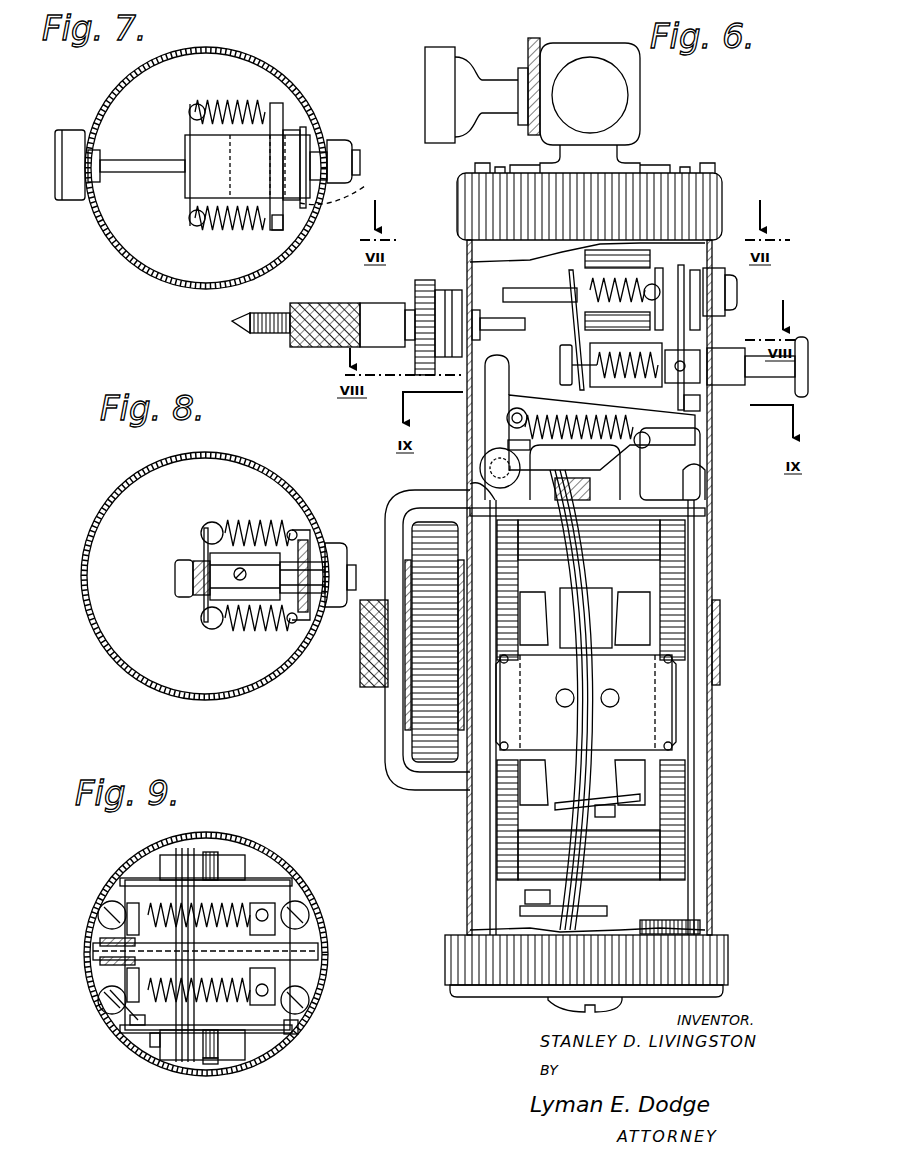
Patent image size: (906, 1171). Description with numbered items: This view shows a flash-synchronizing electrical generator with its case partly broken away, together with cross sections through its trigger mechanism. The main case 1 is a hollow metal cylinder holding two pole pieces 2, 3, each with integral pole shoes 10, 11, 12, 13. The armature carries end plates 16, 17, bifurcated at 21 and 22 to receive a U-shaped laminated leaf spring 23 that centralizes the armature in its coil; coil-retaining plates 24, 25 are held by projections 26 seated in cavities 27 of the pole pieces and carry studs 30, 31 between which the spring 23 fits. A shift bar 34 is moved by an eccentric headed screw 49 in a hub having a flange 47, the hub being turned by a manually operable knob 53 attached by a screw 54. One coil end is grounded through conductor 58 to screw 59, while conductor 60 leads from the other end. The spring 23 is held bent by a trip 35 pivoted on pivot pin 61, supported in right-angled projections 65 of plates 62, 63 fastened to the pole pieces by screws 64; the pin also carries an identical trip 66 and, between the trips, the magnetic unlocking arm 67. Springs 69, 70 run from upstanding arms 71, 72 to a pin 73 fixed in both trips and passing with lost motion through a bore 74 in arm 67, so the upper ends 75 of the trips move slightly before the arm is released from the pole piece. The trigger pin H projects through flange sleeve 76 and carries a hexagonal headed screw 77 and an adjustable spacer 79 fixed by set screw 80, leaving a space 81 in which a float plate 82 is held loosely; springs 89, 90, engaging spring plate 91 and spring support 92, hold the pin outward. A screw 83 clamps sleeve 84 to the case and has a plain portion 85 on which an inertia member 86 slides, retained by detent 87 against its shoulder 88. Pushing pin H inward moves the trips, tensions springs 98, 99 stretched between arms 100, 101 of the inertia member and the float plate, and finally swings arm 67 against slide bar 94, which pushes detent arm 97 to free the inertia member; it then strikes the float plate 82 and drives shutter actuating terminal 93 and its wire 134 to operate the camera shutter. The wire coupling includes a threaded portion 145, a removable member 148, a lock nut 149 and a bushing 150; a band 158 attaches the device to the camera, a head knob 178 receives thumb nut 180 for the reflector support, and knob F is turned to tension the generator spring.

In FIG. 6, the main case 1 is at (712, 786).
In FIG. 6, the pole piece 2 is at (690, 866).
In FIG. 6, the pole piece 3 is at (482, 846).
In FIG. 6, the pole shoe 10 is at (632, 618).
In FIG. 6, the pole shoe 11 is at (633, 782).
In FIG. 6, the pole shoe 12 is at (534, 618).
In FIG. 6, the pole shoe 13 is at (534, 782).
In FIG. 6, the armature end plate 16 is at (600, 586).
In FIG. 6, the armature end plate 17 is at (620, 818).
In FIG. 6, the bifurcation 21 is at (622, 795).
In FIG. 6, the bifurcation 22 is at (570, 600).
In FIG. 9, the bifurcation 22 is at (207, 1064).
In FIG. 6, the U-shaped leaf spring 23 is at (565, 535).
In FIG. 9, the U-shaped leaf spring 23 is at (175, 865).
In FIG. 9, the coil-retaining plate 24 is at (232, 845).
In FIG. 6, the coil-retaining plate 25 is at (673, 750).
In FIG. 9, the coil-retaining plate 25 is at (170, 1060).
In FIG. 6, the projection 26 is at (672, 742).
In FIG. 6, the cavity 27 is at (672, 660).
In FIG. 6, the stud 30 is at (613, 694).
In FIG. 6, the stud 31 is at (562, 701).
In FIG. 6, the shift bar 34 is at (607, 910).
In FIG. 6, the trip 35 is at (590, 478).
In FIG. 9, the trip 35 is at (100, 963).
In FIG. 6, the flange 47 is at (655, 925).
In FIG. 6, the headed screw 49 is at (520, 897).
In FIG. 6, the manually operable knob 53 is at (735, 968).
In FIG. 6, the screw 54 is at (560, 1003).
In FIG. 6, the conductor 58 is at (560, 497).
In FIG. 9, the conductor 58 is at (152, 1045).
In FIG. 6, the screw 59 is at (488, 484).
In FIG. 9, the screw 59 is at (132, 1025).
In FIG. 6, the conductor 60 is at (700, 490).
In FIG. 6, the pivot pin 61 is at (484, 448).
In FIG. 9, the plate 62 is at (285, 882).
In FIG. 9, the plate 63 is at (296, 1034).
In FIG. 9, the screw 64 is at (302, 907).
In FIG. 6, the right angled projection 65 is at (512, 446).
In FIG. 9, the right angled projection 65 is at (100, 912).
In FIG. 9, the trip 66 is at (100, 943).
In FIG. 6, the unlocking arm 67 is at (692, 458).
In FIG. 9, the unlocking arm 67 is at (318, 951).
In FIG. 9, the spring 69 is at (230, 905).
In FIG. 6, the spring 70 is at (605, 420).
In FIG. 9, the spring 70 is at (230, 1002).
In FIG. 9, the upstanding arm 71 is at (268, 905).
In FIG. 6, the upstanding arm 72 is at (651, 442).
In FIG. 9, the upstanding arm 72 is at (268, 1005).
In FIG. 6, the pin 73 is at (519, 409).
In FIG. 9, the pin 73 is at (130, 900).
In FIG. 6, the bore 74 is at (602, 432).
In FIG. 6, the upper end of trip 75 is at (497, 372).
In FIG. 9, the upper end of trip 75 is at (118, 998).
In FIG. 6, the flange sleeve 76 is at (745, 380).
In FIG. 8, the flange sleeve 76 is at (335, 545).
In FIG. 6, the hexagonal headed screw 77 is at (562, 360).
In FIG. 8, the hexagonal headed screw 77 is at (180, 585).
In FIG. 6, the spacer member 79 is at (603, 388).
In FIG. 8, the spacer member 79 is at (267, 576).
In FIG. 8, the set screw 80 is at (228, 574).
In FIG. 8, the space 81 is at (198, 598).
In FIG. 6, the float plate 82 is at (577, 318).
In FIG. 7, the float plate 82 is at (190, 118).
In FIG. 8, the float plate 82 is at (204, 552).
In FIG. 6, the screw 83 is at (737, 302).
In FIG. 7, the screw 83 is at (353, 165).
In FIG. 6, the sleeve 84 is at (728, 284).
In FIG. 6, the plain portion 85 is at (545, 288).
In FIG. 7, the plain portion 85 is at (145, 173).
In FIG. 6, the inertia member 86 is at (600, 252).
In FIG. 7, the detent 87 is at (233, 167).
In FIG. 6, the shoulder 88 is at (652, 284).
In FIG. 6, the spring 89 is at (650, 386).
In FIG. 8, the spring 89 is at (248, 632).
In FIG. 8, the spring 90 is at (252, 520).
In FIG. 8, the spring plate 91 is at (202, 528).
In FIG. 6, the spring support 92 is at (700, 366).
In FIG. 7, the spring support 92 is at (349, 189).
In FIG. 8, the spring support 92 is at (295, 658).
In FIG. 6, the shutter actuating terminal pin 93 is at (500, 316).
In FIG. 7, the shutter actuating terminal pin 93 is at (112, 174).
In FIG. 6, the slide bar 94 is at (700, 406).
In FIG. 7, the slide bar 94 is at (306, 130).
In FIG. 7, the detent arm 97 is at (290, 140).
In FIG. 6, the spring 98 is at (622, 278).
In FIG. 7, the spring 98 is at (246, 229).
In FIG. 7, the spring 99 is at (232, 100).
In FIG. 6, the outstanding arm 100 is at (662, 268).
In FIG. 7, the outstanding arm 100 is at (285, 226).
In FIG. 7, the outstanding arm 101 is at (277, 110).
In FIG. 6, the wire 134 is at (242, 324).
In FIG. 6, the coupling portion 145 is at (380, 302).
In FIG. 6, the coupling member 148 is at (294, 342).
In FIG. 6, the threaded lock nut 149 is at (422, 280).
In FIG. 6, the bushing 150 is at (442, 290).
In FIG. 6, the band 158 is at (718, 622).
In FIG. 6, the head knob 178 is at (632, 92).
In FIG. 6, the thumb nut 180 is at (437, 52).
In FIG. 6, the trigger pin H is at (374, 630).
In FIG. 6, the knob F is at (757, 937).